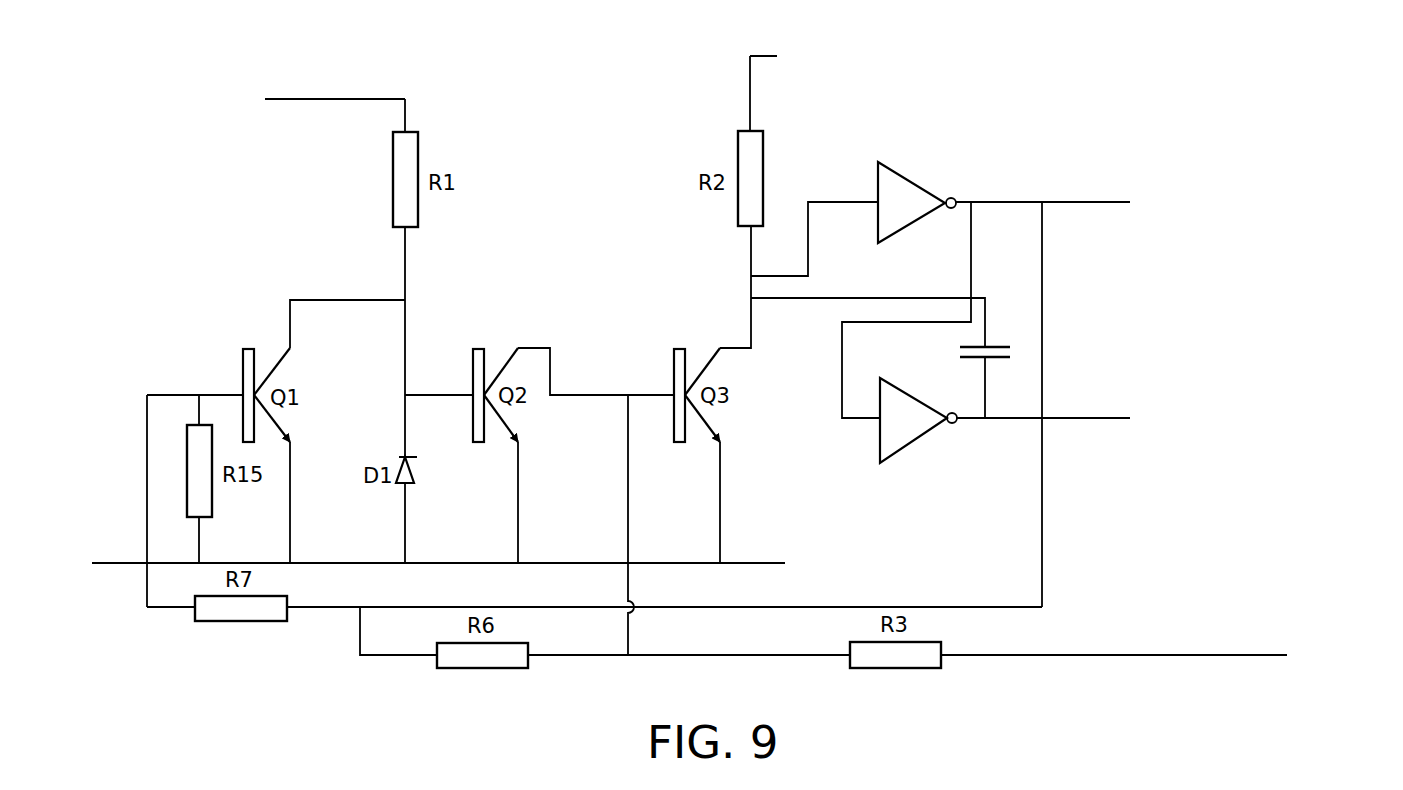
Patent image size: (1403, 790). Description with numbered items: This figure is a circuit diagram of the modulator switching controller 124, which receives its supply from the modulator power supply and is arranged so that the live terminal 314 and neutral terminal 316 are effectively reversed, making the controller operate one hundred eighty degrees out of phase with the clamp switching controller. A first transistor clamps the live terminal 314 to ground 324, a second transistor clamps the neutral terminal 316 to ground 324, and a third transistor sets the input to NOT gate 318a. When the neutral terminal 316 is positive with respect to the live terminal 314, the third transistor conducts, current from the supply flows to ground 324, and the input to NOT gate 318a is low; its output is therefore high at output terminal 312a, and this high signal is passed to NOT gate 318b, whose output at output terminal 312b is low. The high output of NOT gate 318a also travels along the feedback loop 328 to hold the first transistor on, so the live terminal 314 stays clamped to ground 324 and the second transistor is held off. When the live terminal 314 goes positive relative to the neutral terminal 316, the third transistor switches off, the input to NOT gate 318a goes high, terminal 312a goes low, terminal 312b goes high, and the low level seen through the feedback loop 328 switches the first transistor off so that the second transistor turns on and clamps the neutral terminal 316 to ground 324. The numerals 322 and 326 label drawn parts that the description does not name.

The modulator switching controller 124 is at (1010, 268).
The output terminal 312a is at (1151, 185).
The output terminal 312b is at (1151, 398).
The live terminal 314 is at (279, 96).
The neutral terminal 316 is at (1303, 668).
The NOT gate 318a is at (913, 182).
The NOT gate 318b is at (916, 441).
The capacitor C8 322 is at (956, 350).
The ground 324 is at (545, 562).
The +5V supply 326 is at (727, 52).
The feedback loop 328 is at (1044, 513).